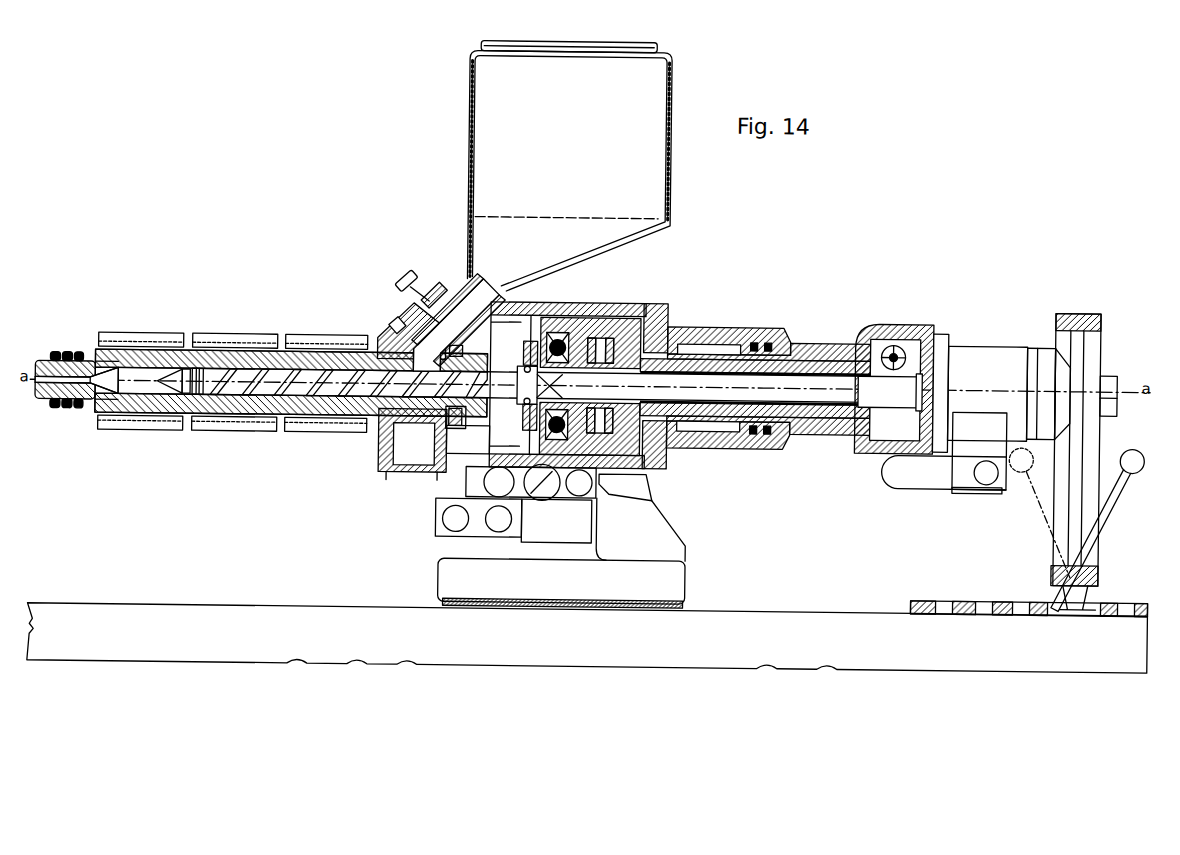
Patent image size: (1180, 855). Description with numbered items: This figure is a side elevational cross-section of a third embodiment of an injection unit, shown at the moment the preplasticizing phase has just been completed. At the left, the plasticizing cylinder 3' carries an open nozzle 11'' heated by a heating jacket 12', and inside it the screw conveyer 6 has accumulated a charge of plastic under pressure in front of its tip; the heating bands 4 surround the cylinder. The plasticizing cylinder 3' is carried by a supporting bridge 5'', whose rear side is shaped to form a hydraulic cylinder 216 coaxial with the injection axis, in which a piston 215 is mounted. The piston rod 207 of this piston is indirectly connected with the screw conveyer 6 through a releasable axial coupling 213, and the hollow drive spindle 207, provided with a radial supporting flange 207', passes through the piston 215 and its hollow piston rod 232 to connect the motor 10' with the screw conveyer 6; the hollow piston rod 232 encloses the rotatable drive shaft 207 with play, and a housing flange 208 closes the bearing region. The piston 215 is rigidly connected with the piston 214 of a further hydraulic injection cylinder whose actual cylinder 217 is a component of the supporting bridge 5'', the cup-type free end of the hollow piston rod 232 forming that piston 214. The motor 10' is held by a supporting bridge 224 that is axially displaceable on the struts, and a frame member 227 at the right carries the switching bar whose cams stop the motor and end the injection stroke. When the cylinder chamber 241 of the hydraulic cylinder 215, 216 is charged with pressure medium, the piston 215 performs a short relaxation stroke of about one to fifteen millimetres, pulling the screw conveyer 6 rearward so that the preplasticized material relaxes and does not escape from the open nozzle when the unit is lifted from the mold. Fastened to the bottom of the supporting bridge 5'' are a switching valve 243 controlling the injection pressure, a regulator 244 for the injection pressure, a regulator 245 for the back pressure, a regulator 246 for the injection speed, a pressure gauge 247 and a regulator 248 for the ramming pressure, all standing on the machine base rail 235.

The heating jacket 12' is at (67, 340).
The open nozzle 11'' is at (84, 335).
The heating bands 4 is at (166, 338).
The plasticizing cylinder 3' is at (292, 344).
The screw conveyer 6 is at (341, 380).
The supporting bridge 5'' is at (410, 391).
The cylinder 217 is at (546, 361).
The releasable axial coupling 213 is at (468, 285).
The radial supporting flange 207' is at (593, 359).
The housing flange 208 is at (647, 306).
The cylinder chamber 241 is at (695, 345).
The drive shaft 207 is at (756, 342).
The hydraulic cylinder 216 is at (767, 331).
The piston 215 is at (792, 348).
The supporting bridge 224 is at (930, 320).
The motor 10' is at (976, 382).
The frame member 227 is at (1062, 309).
The piston 214 is at (657, 449).
The hollow piston rod 232 is at (787, 428).
The regulator for the injection speed 246 is at (488, 491).
The regulator for the back pressure 245 is at (448, 525).
The regulator for the injection pressure 244 is at (493, 531).
The switching valve 243 is at (565, 537).
The pressure gauge 247 is at (548, 496).
The regulator for the ramming pressure 248 is at (578, 495).
The foundation rail 235 is at (972, 610).